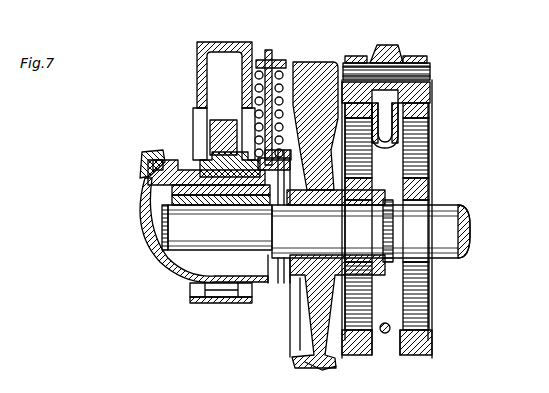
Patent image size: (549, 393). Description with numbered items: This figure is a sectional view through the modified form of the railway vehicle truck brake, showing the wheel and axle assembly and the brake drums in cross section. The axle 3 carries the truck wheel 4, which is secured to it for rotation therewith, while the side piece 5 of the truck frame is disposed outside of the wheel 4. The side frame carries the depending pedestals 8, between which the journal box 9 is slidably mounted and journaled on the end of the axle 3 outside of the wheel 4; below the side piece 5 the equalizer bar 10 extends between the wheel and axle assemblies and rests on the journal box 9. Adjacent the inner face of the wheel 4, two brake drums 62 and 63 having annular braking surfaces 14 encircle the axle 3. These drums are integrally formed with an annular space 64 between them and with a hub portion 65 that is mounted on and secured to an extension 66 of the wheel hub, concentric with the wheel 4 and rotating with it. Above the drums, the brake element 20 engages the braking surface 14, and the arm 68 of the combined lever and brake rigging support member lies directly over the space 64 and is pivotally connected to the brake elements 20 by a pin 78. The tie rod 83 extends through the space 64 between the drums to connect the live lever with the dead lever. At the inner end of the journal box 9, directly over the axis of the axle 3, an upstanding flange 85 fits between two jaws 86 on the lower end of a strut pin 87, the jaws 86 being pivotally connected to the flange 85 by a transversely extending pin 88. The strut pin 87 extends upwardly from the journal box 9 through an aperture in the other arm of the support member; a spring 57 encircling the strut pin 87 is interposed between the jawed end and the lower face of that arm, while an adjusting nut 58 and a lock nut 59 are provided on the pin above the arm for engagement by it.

The axle 3 is at (470, 240).
The wheel 4 is at (298, 357).
The side piece 5 is at (197, 68).
The pedestal 8 is at (200, 300).
The journal box 9 is at (160, 268).
The equalizer bar 10 is at (210, 128).
The braking surface 14 is at (345, 356).
The brake element 20 is at (355, 56).
The spring 57 is at (272, 92).
The adjusting nut 58 is at (284, 58).
The lock nut 59 is at (257, 50).
The brake drum 62 is at (426, 200).
The brake drum 63 is at (392, 148).
The annular space 64 is at (432, 120).
The hub portion 65 is at (430, 186).
The extension of the hub 66 is at (400, 265).
The arm 68 is at (400, 45).
The pin 78 is at (432, 70).
The tie rod 83 is at (385, 334).
The upstanding flange 85 is at (286, 200).
The jaws 86 is at (243, 196).
The strut pin 87 is at (286, 98).
The pin 88 is at (205, 196).